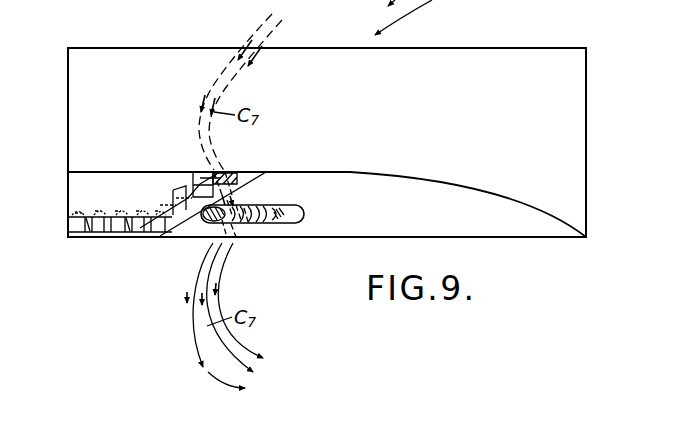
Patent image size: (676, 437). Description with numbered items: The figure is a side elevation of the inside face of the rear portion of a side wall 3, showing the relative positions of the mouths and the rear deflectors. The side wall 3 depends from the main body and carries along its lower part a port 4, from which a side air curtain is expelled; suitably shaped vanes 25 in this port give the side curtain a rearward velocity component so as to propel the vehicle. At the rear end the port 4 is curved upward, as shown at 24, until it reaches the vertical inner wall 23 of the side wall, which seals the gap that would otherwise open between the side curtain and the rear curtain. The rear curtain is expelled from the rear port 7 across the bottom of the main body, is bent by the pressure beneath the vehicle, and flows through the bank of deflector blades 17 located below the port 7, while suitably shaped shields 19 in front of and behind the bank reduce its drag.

The side wall 3 is at (509, 68).
The port 4 is at (146, 235).
The rear port 7 is at (258, 34).
The bank of deflector blades 17 is at (257, 226).
The shield 19 is at (278, 209).
The vertical inner wall 23 is at (409, 126).
The curved rear end of port 24 is at (166, 212).
The vane 25 is at (124, 233).